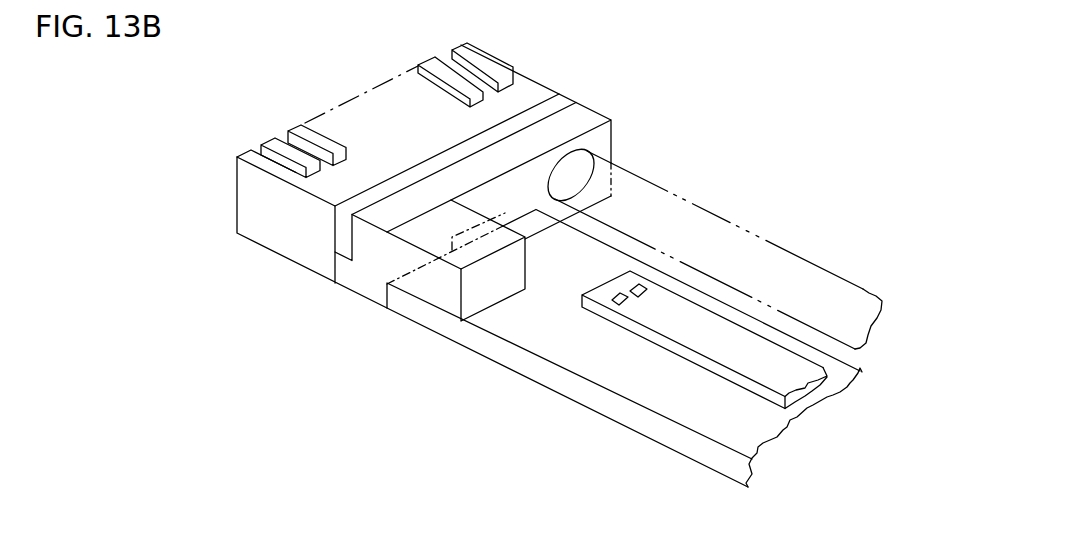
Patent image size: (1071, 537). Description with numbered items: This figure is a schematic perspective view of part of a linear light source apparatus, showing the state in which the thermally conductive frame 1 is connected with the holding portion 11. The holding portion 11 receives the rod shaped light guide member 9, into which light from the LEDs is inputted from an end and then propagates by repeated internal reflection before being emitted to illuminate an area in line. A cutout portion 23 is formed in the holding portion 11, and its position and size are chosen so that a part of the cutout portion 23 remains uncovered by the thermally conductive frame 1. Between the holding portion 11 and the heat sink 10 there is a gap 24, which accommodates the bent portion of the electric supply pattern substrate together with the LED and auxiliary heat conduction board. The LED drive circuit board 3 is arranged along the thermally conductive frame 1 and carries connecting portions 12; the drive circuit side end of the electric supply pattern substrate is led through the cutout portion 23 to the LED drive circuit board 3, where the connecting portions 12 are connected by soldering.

The thermally conductive frame 1 is at (735, 461).
The LED drive circuit substrate 3 is at (728, 355).
The rod shaped light guide member 9 is at (738, 229).
The heat sink 10 is at (463, 48).
The holding portion 11 is at (590, 116).
The connecting portions 12 is at (640, 292).
The cutout portion 23 is at (505, 215).
The gap 24 is at (347, 240).